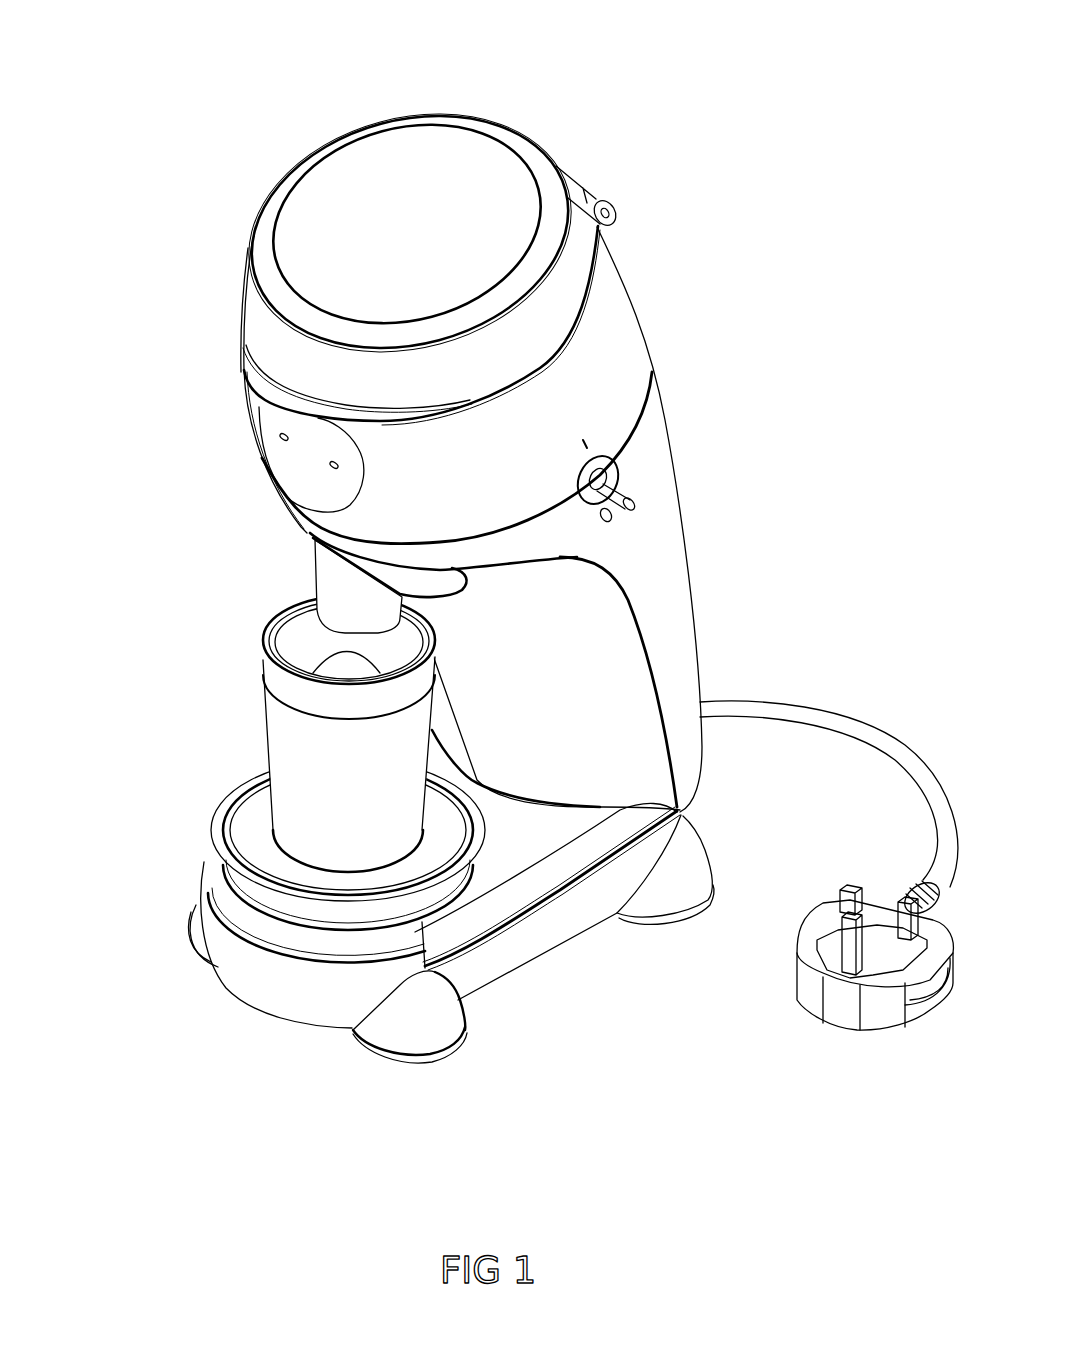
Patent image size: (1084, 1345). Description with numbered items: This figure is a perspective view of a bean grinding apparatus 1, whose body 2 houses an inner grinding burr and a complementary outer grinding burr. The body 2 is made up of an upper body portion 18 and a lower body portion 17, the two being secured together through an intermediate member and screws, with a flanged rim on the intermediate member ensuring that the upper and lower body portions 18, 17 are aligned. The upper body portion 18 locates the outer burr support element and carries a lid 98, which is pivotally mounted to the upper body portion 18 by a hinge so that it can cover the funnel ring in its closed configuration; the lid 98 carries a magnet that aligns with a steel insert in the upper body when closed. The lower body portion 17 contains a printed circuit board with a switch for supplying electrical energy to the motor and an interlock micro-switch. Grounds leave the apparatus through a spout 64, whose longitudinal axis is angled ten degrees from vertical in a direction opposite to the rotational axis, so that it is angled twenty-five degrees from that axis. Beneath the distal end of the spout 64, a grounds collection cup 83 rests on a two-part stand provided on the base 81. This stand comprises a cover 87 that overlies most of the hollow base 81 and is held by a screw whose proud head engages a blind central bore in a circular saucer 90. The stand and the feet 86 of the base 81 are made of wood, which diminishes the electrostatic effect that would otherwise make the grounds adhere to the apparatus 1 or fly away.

The bean grinding apparatus 1 is at (255, 130).
The body 2 is at (693, 472).
The lower body portion 17 is at (673, 643).
The upper body portion 18 is at (618, 343).
The spout 64 is at (347, 585).
The base 81 is at (537, 933).
The grounds collection cup 83 is at (348, 779).
The feet 86 is at (413, 1002).
The cover 87 is at (282, 935).
The circular saucer 90 is at (272, 905).
The lid 98 is at (425, 218).